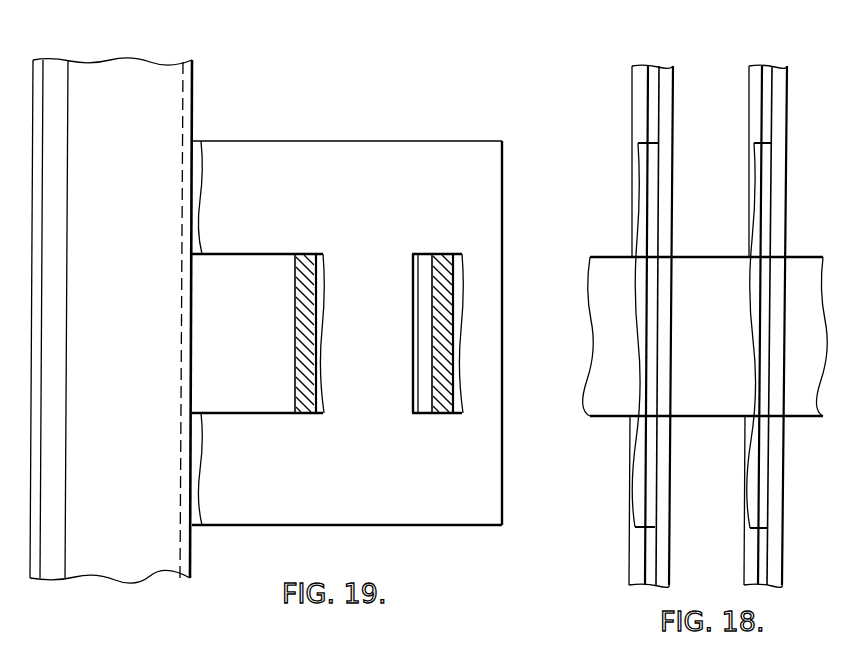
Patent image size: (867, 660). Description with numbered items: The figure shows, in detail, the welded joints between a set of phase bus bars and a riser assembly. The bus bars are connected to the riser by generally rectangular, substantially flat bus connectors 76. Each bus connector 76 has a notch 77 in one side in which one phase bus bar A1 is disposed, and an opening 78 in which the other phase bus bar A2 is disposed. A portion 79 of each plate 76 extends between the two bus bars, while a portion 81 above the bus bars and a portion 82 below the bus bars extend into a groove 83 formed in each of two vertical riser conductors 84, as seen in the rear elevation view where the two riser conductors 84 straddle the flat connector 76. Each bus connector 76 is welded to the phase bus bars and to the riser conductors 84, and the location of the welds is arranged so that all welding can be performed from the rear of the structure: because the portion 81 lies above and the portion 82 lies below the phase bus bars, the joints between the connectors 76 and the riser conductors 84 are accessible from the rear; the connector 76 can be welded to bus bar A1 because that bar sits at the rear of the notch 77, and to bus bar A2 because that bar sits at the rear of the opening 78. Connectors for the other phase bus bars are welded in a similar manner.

In FIG. 19, the bus connector 76 is at (369, 135).
In FIG. 18, the bus connector 76 is at (640, 302).
In FIG. 19, the notch 77 is at (252, 276).
In FIG. 19, the opening 78 is at (420, 268).
In FIG. 19, the portion 79 is at (372, 396).
In FIG. 19, the portion 81 is at (222, 140).
In FIG. 18, the portion 81 is at (772, 190).
In FIG. 19, the portion 82 is at (232, 526).
In FIG. 18, the portion 82 is at (762, 480).
In FIG. 18, the groove 83 is at (653, 74).
In FIG. 19, the riser conductor 84 is at (173, 80).
In FIG. 18, the riser conductor 84 is at (631, 105).
In FIG. 19, the phase bus bar A1 is at (300, 304).
In FIG. 19, the phase bus bar A2 is at (438, 321).
In FIG. 18, the phase bus bar A2 is at (798, 263).